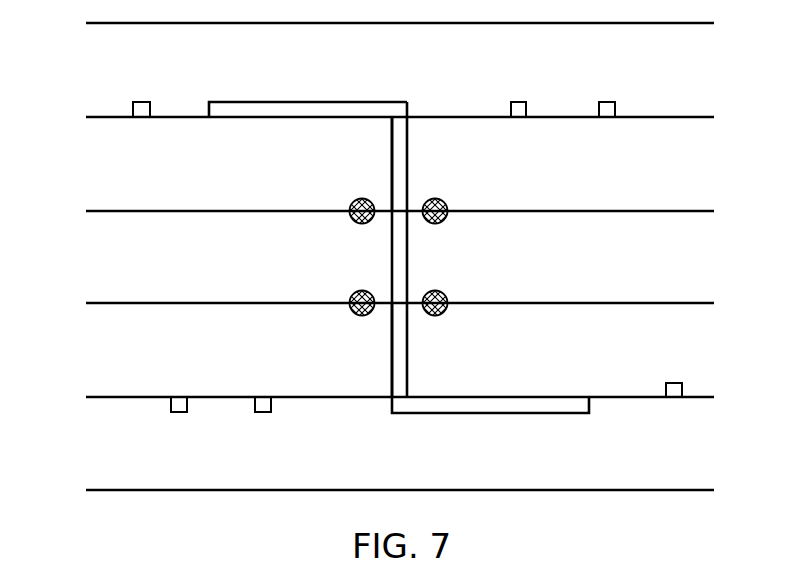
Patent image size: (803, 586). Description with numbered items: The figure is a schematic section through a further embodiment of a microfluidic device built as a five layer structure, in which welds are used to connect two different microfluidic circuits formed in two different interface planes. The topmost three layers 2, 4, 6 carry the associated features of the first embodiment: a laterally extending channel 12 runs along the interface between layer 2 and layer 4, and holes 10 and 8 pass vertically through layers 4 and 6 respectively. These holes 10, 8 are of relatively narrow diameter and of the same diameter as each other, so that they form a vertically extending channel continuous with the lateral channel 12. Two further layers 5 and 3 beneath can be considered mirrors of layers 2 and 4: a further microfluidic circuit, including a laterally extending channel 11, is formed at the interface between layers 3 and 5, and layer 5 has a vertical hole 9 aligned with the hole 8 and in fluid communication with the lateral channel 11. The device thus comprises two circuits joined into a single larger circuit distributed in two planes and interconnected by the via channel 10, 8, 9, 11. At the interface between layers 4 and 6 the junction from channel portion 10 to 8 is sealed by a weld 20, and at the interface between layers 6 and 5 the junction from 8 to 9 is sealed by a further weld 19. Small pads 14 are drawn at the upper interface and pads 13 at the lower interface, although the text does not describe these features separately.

The topmost layer 2 is at (85, 67).
The bottom layer 3 is at (85, 452).
The second layer 4 is at (85, 170).
The fourth layer 5 is at (85, 353).
The middle layer 6 is at (85, 262).
The hole 8 is at (391, 262).
The vertical hole 9 is at (391, 360).
The hole 10 is at (391, 167).
The laterally extending channel 11 is at (489, 413).
The laterally extending channel 12 is at (312, 101).
The lower contact pads 13 is at (179, 412).
The upper contact pads 14 is at (141, 101).
The weld 19 is at (436, 317).
The weld 20 is at (440, 197).